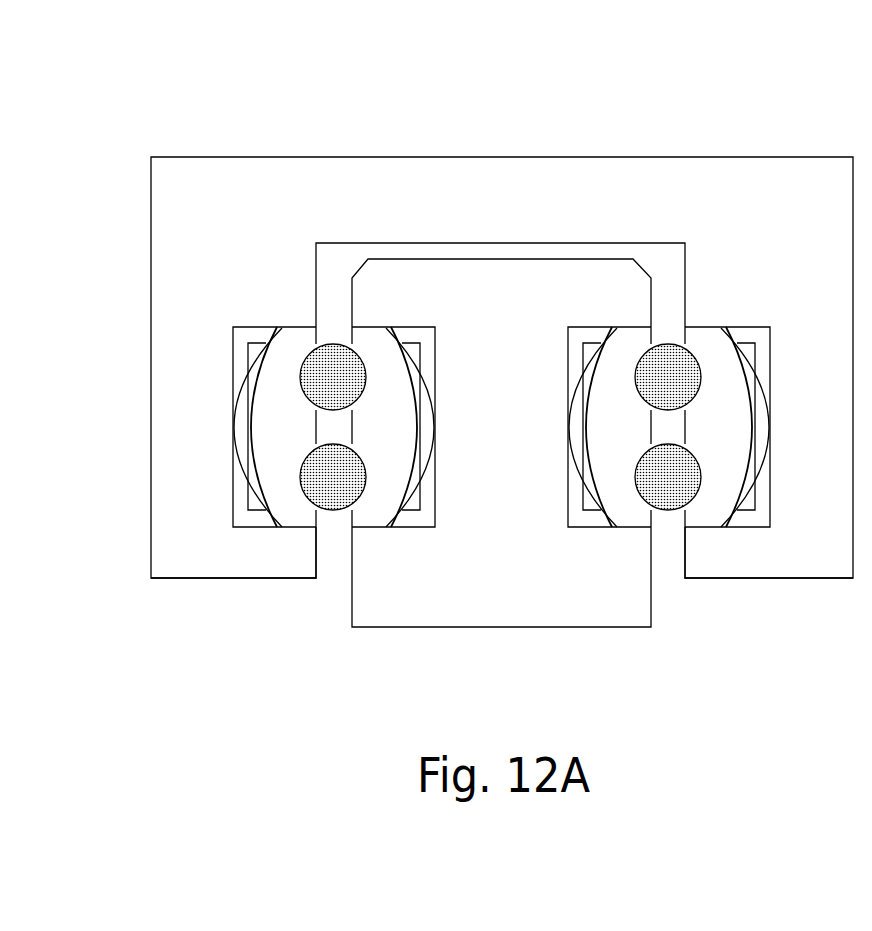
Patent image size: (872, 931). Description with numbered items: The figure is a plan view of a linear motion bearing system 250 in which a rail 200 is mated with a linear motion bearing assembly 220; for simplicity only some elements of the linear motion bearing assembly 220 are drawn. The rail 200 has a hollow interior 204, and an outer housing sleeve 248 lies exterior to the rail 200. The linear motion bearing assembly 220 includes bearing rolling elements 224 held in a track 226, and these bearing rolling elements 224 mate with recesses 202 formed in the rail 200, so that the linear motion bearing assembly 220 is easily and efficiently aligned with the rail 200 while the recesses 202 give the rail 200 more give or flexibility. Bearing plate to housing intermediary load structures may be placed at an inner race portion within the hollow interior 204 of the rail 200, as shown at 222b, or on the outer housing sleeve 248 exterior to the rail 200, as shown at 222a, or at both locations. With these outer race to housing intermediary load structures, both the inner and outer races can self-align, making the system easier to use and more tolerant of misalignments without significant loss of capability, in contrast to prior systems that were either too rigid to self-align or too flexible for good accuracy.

The linear motion bearing system 250 is at (182, 76).
The outer housing sleeve 248 is at (477, 185).
The hollow interior 204 is at (341, 266).
The rail 200 is at (388, 610).
The linear motion bearing assembly 220 is at (276, 551).
The bearing plate to housing intermediary load structure at outer housing sleeve 222a is at (245, 425).
The bearing plate to housing intermediary load structure at inner race portion 222b is at (580, 387).
The bearing rolling element 224 is at (330, 357).
The track 226 is at (500, 427).
The recess 202 is at (500, 427).